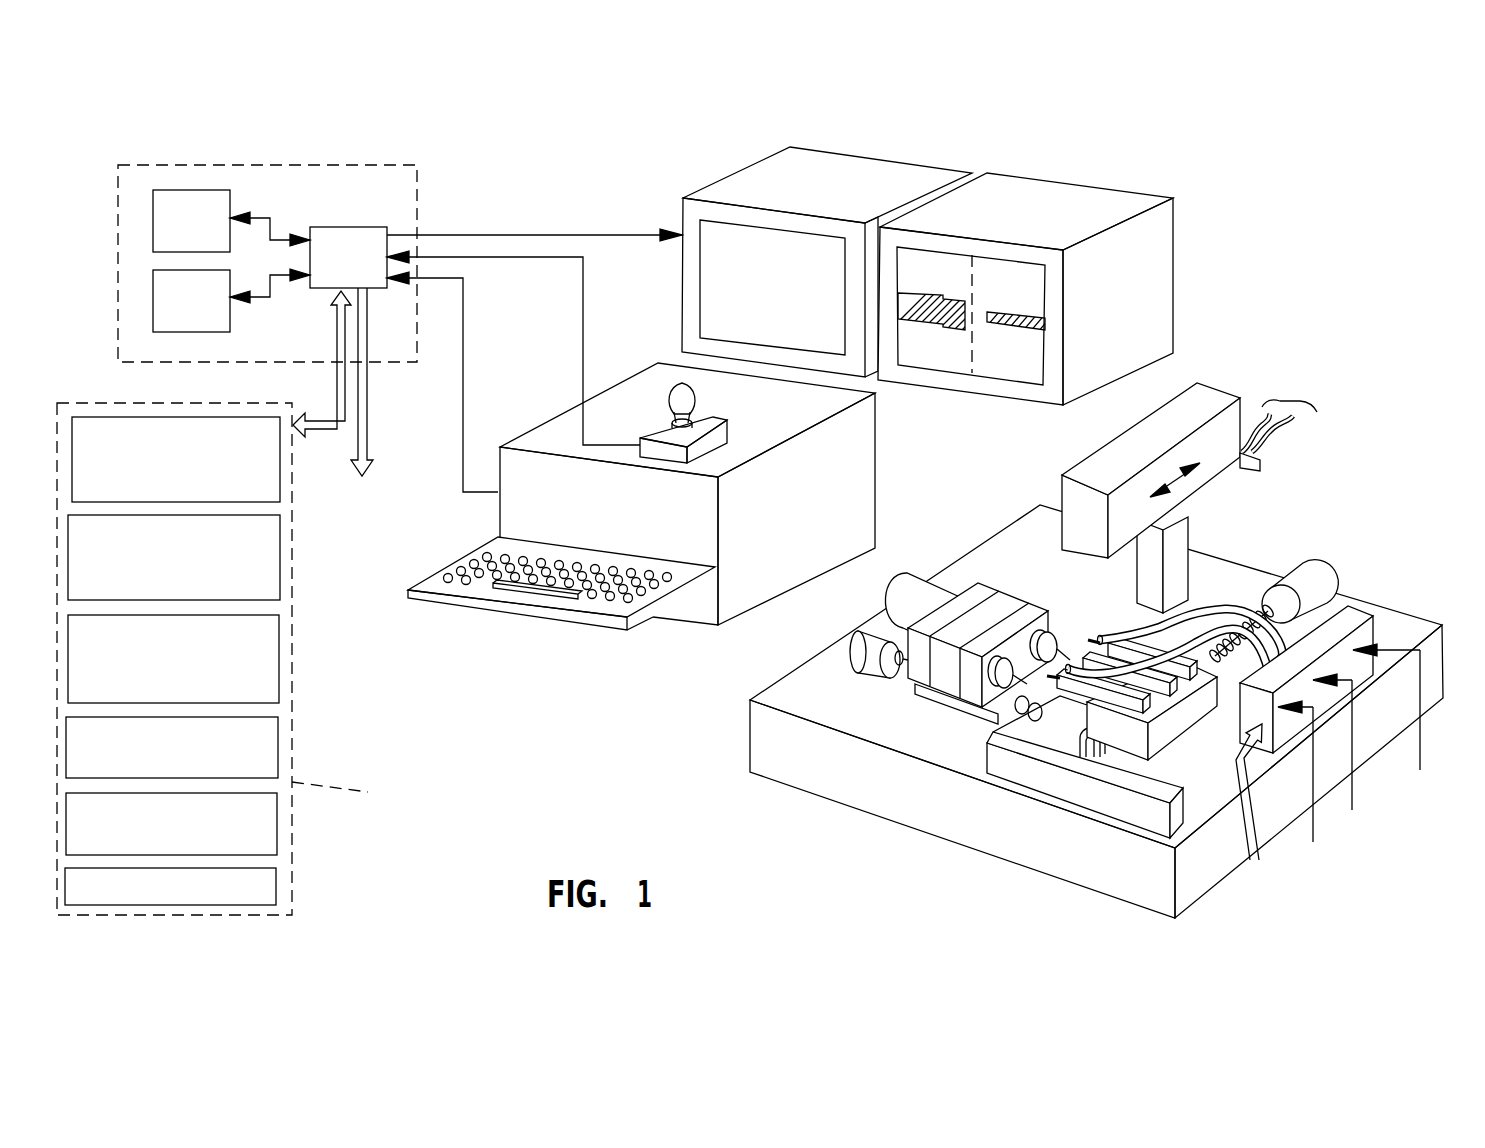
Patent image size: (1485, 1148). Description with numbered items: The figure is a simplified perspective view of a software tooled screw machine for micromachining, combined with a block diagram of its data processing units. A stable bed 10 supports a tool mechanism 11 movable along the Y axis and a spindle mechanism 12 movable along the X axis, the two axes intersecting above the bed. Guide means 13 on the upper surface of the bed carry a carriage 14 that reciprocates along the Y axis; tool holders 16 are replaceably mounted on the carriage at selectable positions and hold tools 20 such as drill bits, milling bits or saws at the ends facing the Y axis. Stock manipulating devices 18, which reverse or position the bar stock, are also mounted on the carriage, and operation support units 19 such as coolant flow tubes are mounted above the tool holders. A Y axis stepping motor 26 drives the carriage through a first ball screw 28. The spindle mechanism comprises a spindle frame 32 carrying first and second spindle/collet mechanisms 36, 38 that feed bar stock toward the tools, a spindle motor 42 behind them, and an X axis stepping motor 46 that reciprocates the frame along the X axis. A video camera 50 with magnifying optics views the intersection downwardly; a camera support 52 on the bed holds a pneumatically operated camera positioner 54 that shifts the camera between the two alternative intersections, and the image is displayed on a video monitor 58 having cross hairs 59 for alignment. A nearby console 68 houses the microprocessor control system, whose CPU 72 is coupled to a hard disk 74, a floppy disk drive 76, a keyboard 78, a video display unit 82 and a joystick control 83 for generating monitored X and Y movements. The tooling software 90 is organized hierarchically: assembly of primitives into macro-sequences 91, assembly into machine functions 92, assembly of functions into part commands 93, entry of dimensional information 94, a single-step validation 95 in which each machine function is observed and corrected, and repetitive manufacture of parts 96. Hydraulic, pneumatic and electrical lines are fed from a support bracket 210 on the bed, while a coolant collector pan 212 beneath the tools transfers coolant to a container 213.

The bed 10 is at (1362, 593).
The tool mechanism 11 is at (1208, 770).
The spindle mechanism 12 is at (885, 700).
The guide means 13 is at (1123, 758).
The carriage 14 is at (1180, 702).
The tool holders 16 is at (1177, 697).
The stock manipulating devices 18 is at (1077, 650).
The operation support units 19 is at (1210, 608).
The tools 20 is at (1097, 638).
The Y axis stepping motor 26 is at (1320, 573).
The first ball screw 28 is at (1222, 623).
The spindle frame 32 is at (983, 592).
The first spindle/collet mechanism 36 is at (973, 705).
The second spindle/collet mechanism 38 is at (1045, 633).
The spindle motor 42 is at (862, 652).
The X axis stepping motor 46 is at (910, 592).
The video camera 50 is at (1217, 400).
The camera support 52 is at (1180, 577).
The camera positioner 54 is at (1262, 462).
The video monitor 58 is at (1150, 278).
The cross hairs 59 is at (983, 312).
The console 68 is at (858, 465).
The CPU 72 is at (362, 226).
The hard disk 74 is at (232, 205).
The floppy disk drive 76 is at (232, 318).
The keyboard 78 is at (565, 615).
The video display unit 82 is at (873, 178).
The joystick control 83 is at (655, 422).
The tooling software 90 is at (292, 712).
The assembly of primitives into macro-sequences 91 is at (280, 477).
The machine functions 92 is at (280, 582).
The assembly of functions into part commands 93 is at (279, 667).
The dimensional information entry step 94 is at (278, 748).
The single-step validation 95 is at (277, 820).
The repetitive manufacture of parts 96 is at (276, 888).
The support bracket 210 is at (1375, 617).
The coolant collector pan 212 is at (978, 735).
The container 213 is at (1053, 783).